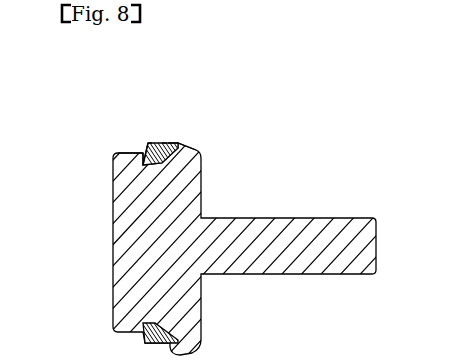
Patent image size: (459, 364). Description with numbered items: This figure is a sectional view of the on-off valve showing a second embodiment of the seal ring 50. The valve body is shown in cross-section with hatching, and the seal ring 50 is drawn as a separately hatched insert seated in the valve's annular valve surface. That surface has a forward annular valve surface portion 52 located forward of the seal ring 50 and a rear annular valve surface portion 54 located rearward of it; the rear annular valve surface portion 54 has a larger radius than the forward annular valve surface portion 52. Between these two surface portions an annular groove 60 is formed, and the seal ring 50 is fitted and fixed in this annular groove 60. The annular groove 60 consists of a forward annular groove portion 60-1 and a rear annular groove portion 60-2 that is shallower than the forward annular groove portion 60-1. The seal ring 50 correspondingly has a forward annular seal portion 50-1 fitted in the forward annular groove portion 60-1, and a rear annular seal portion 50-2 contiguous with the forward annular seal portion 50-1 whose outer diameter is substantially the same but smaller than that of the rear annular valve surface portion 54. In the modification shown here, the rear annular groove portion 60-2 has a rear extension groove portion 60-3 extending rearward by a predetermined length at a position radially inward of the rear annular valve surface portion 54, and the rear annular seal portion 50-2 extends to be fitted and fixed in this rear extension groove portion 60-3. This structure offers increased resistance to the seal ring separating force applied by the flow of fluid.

The seal ring 50 is at (170, 162).
The forward annular seal portion 50-1 is at (150, 143).
The rear annular seal portion 50-2 is at (164, 145).
The forward annular valve surface portion 52 is at (145, 155).
The rear annular valve surface portion 54 is at (172, 143).
The annular groove 60 is at (148, 148).
The forward annular groove portion 60-1 is at (143, 161).
The rear annular groove portion 60-2 is at (169, 145).
The rear extension groove portion 60-3 is at (195, 148).